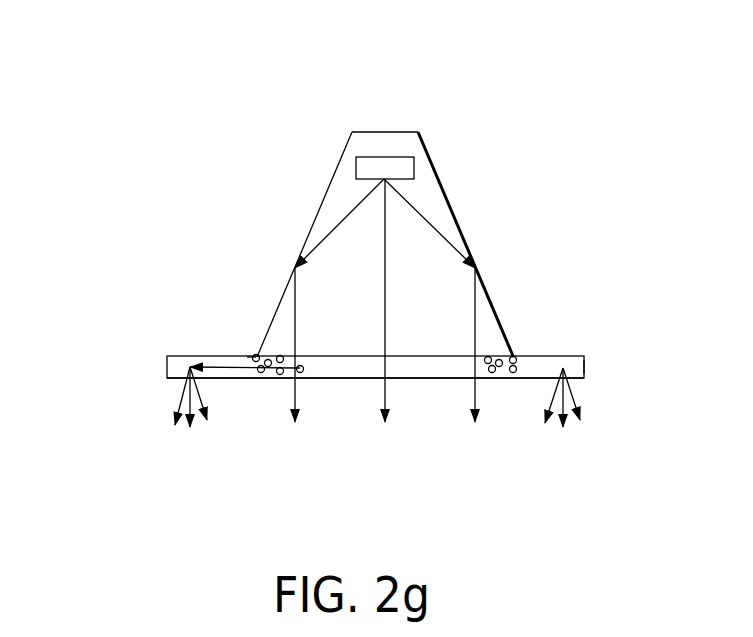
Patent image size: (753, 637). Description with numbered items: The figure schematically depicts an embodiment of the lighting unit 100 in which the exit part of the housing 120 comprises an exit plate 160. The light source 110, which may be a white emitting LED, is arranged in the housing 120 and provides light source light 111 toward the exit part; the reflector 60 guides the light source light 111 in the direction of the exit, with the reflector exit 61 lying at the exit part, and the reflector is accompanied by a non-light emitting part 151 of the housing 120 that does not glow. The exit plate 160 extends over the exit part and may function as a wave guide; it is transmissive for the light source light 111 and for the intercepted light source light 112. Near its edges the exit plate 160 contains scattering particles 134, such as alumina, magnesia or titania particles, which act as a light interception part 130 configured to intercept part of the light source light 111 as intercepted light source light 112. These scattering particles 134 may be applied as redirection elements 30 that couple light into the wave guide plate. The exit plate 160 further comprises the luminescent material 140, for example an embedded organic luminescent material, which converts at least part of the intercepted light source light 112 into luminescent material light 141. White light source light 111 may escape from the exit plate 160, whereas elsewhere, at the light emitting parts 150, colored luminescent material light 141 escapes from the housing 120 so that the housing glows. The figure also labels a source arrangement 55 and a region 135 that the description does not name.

The lighting unit 100 is at (117, 146).
The deposition source assembly 55 is at (453, 88).
The light source 110 is at (400, 162).
The housing 120 is at (470, 150).
The reflector 60 is at (445, 193).
The reflector exit 61 is at (433, 355).
The non-light emitting part 151 is at (307, 237).
The light source light 111 is at (388, 397).
The luminescent material 140 is at (177, 365).
The exit plate 160 is at (602, 370).
The intercepted light source light 112 is at (222, 358).
The scattering particles 134 is at (267, 364).
The deposit boundary 135 is at (247, 358).
The luminescent material light 141 is at (177, 393).
The light emitting part 150 is at (215, 373).
The light interception part 130 is at (233, 418).
The redirection element 30 is at (285, 427).